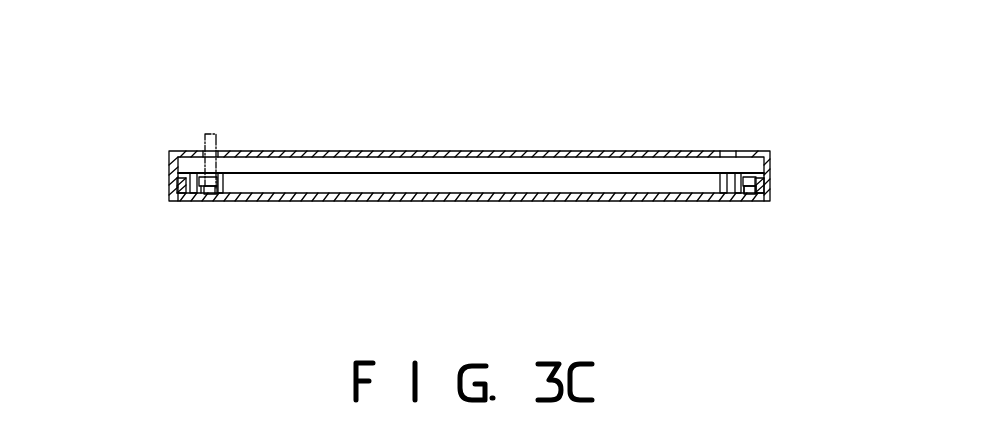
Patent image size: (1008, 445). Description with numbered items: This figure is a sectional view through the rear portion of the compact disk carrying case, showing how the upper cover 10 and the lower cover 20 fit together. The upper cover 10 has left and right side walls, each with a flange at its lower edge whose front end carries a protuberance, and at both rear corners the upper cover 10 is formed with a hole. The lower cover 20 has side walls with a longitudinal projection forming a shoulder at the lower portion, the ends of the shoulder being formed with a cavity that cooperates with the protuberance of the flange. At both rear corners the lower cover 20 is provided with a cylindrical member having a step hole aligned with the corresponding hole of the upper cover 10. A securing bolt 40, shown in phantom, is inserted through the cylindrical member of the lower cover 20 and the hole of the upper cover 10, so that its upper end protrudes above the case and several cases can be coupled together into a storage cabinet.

The upper cover 10 is at (478, 151).
The lower cover 20 is at (462, 200).
The securing bolt 40 is at (205, 148).